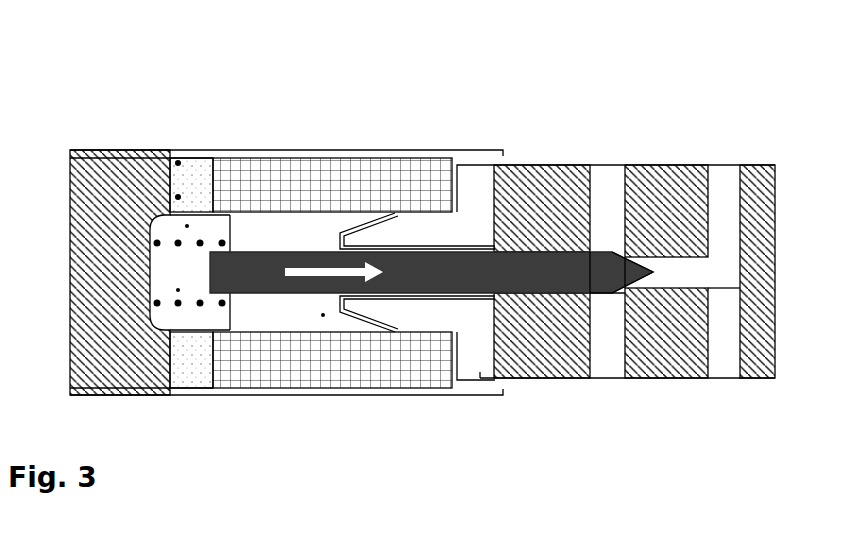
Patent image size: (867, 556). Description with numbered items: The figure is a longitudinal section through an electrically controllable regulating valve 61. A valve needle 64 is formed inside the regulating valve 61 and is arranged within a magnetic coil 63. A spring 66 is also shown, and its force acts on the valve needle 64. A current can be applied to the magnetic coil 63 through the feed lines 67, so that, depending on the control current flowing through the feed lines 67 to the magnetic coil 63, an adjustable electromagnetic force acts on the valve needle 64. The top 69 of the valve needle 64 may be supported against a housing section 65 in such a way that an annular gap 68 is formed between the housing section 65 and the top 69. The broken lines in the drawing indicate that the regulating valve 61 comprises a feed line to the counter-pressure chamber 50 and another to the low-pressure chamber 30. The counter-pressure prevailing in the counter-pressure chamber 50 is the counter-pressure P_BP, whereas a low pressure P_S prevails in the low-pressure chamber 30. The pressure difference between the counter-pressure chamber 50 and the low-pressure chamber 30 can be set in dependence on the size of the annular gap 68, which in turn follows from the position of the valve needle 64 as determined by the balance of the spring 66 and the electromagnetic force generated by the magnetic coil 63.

The regulating valve 61 is at (505, 93).
The magnetic coil 63 is at (340, 182).
The valve needle 64 is at (260, 268).
The housing section 65 is at (650, 187).
The spring 66 is at (178, 306).
The feed lines 67 is at (178, 197).
The annular gap 68 is at (623, 292).
The top of the valve needle 69 is at (623, 262).
The low-pressure chamber 30 is at (594, 380).
The counter-pressure chamber 50 is at (722, 378).